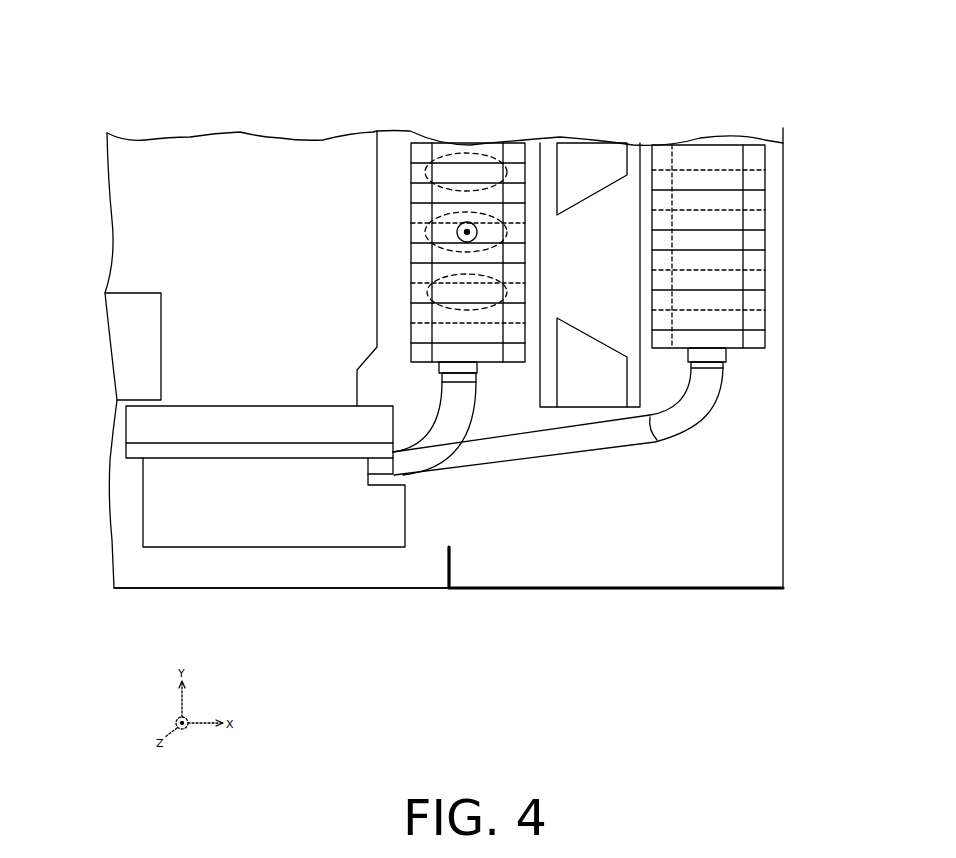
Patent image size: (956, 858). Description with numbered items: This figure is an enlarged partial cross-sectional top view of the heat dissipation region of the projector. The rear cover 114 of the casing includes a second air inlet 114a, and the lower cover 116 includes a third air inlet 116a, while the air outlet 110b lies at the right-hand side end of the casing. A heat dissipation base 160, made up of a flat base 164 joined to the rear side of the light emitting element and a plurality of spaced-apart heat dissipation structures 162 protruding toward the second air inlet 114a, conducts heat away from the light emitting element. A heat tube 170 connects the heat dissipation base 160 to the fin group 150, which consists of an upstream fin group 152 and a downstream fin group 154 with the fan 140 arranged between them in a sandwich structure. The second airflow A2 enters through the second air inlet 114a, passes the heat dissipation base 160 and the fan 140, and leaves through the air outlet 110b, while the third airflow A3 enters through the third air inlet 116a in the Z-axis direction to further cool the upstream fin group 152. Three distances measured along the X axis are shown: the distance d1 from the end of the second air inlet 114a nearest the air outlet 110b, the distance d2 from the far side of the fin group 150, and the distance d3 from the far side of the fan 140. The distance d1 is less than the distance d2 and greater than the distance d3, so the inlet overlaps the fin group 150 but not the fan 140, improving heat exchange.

The air outlet 110b is at (798, 501).
The rear cover 114 is at (525, 595).
The second air inlet 114a is at (288, 592).
The lower cover 116 is at (765, 550).
The third air inlet 116a is at (372, 167).
The fan 140 is at (630, 302).
The fin group 150 is at (650, 275).
The upstream fin group 152 is at (510, 211).
The downstream fin group 154 is at (723, 278).
The heat dissipation base 160 is at (232, 542).
The heat dissipation structures 162 is at (158, 515).
The base 164 is at (135, 452).
The heat tube 170 is at (703, 397).
The second airflow A2 is at (385, 560).
The third airflow A3 is at (458, 232).
The distance d1 is at (783, 590).
The distance d2 is at (410, 640).
The distance d3 is at (540, 407).